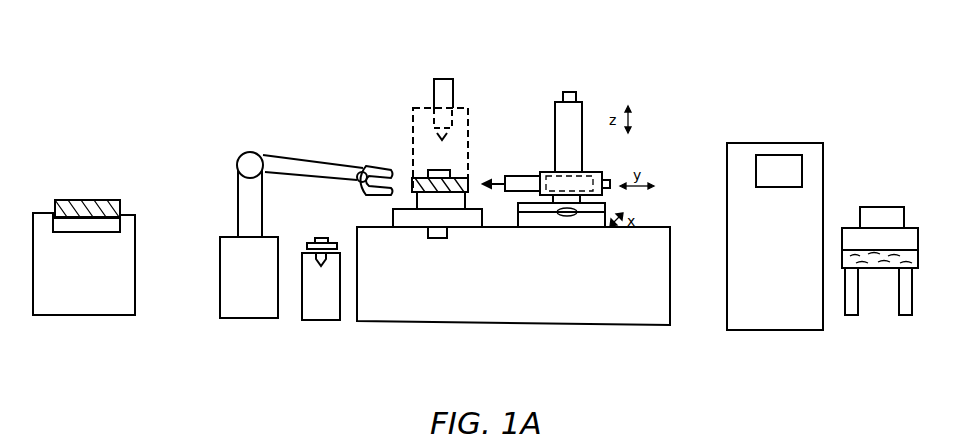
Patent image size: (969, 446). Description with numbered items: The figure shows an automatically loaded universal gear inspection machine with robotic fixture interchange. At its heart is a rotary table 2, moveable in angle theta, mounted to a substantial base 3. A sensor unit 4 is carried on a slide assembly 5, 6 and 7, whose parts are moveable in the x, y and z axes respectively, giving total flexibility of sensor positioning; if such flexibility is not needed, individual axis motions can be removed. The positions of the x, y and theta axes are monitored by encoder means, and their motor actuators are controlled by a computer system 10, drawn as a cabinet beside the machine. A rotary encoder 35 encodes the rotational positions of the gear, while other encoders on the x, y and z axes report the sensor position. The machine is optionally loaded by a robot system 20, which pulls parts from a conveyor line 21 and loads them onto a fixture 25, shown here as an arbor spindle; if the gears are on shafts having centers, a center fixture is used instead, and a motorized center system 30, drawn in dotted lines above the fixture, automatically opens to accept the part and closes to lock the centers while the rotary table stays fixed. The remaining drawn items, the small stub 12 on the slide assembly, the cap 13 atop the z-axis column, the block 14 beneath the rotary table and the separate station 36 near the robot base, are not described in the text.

The rotary table 2 is at (393, 214).
The base 3 is at (394, 264).
The sensor unit 4 is at (518, 176).
The slide assembly (x axis) 5 is at (605, 206).
The slide assembly (y axis) 6 is at (590, 176).
The slide assembly (z axis) 7 is at (582, 117).
The computer system 10 is at (834, 186).
The actuator 12 is at (610, 178).
The cable connector 13 is at (572, 91).
The drive 14 is at (437, 238).
The robot system 20 is at (250, 152).
The conveyor line 21 is at (29, 220).
The fixture 25 is at (445, 168).
The motorized center system 30 is at (467, 108).
The rotary encoder 35 is at (417, 200).
The cleaning station 36 is at (323, 321).